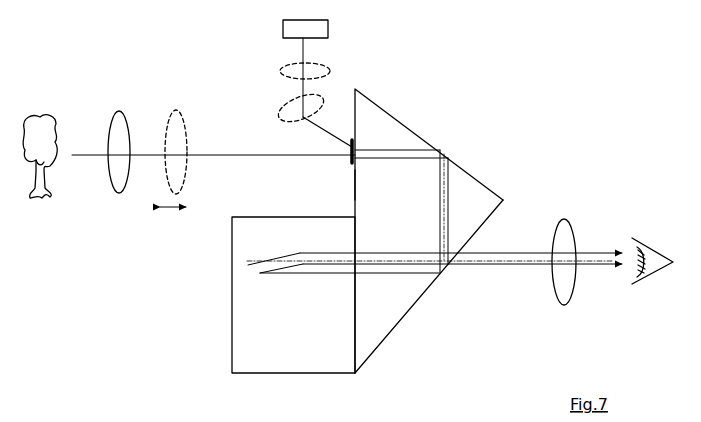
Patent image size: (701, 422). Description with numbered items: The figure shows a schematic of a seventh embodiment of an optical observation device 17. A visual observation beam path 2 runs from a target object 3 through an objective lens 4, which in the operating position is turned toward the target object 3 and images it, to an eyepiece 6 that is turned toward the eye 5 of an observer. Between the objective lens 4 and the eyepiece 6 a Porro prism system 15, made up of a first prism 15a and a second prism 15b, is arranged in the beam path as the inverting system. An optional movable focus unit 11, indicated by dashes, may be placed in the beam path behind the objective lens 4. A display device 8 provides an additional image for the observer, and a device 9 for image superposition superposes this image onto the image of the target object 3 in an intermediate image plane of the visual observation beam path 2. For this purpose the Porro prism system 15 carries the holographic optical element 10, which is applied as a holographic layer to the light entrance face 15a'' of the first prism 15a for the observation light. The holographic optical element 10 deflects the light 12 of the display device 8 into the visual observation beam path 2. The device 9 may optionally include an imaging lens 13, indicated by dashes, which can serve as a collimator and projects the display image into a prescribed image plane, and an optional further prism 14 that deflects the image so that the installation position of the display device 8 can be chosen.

The visual observation beam path 2 is at (244, 158).
The target object 3 is at (33, 203).
The objective lens 4 is at (112, 190).
The eye 5 is at (658, 283).
The eyepiece 6 is at (564, 292).
The display device 8 is at (300, 30).
The device for image superposition 9 is at (353, 73).
The holographic optical element 10 is at (349, 136).
The movable focus unit 11 is at (178, 172).
The light to be superposed 12 is at (323, 133).
The imaging lens 13 is at (292, 68).
The further prism 14 is at (292, 108).
The Porro prism system 15 is at (428, 118).
The first prism 15a is at (429, 306).
The light entrance face 15a'' is at (318, 189).
The second prism 15b is at (290, 340).
The optical observation device 17 is at (557, 152).